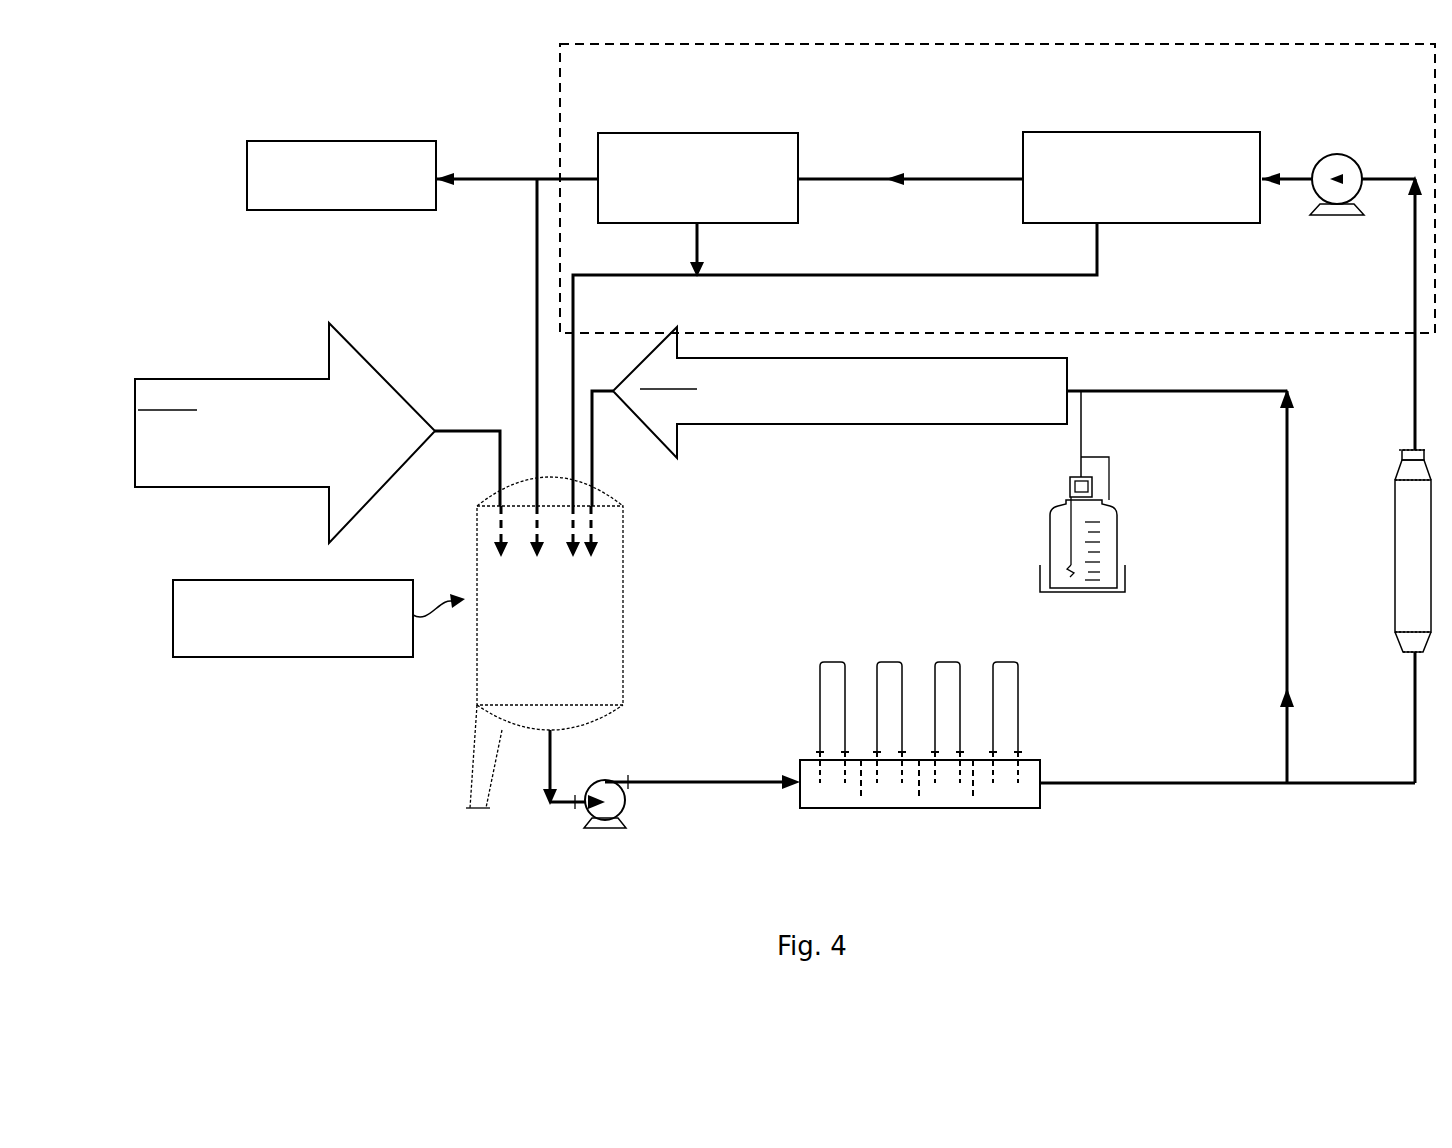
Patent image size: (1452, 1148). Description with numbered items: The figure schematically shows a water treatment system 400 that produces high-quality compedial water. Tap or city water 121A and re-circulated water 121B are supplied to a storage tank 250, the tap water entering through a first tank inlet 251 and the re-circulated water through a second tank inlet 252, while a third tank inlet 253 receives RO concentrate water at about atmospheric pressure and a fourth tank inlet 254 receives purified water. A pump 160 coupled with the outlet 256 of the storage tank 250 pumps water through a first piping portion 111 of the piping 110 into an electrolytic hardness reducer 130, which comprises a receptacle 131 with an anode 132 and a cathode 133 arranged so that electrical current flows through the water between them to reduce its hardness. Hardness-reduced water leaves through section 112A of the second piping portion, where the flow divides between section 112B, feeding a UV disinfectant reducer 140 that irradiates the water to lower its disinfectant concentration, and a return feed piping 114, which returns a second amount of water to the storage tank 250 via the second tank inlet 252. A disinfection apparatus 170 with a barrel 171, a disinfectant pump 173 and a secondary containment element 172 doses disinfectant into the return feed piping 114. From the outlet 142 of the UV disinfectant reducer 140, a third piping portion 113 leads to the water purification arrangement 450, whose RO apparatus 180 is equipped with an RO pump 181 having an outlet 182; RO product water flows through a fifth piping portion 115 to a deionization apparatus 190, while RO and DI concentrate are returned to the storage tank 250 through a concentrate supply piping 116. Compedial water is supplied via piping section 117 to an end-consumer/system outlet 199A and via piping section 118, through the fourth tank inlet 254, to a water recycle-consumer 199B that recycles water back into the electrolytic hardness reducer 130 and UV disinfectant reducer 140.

The water treatment system 400 is at (446, 100).
The water purification arrangement 450 is at (560, 86).
The end-consumer/system outlet 199A is at (296, 140).
The water recycle-consumer 199B is at (225, 578).
The Deionization (DI) apparatus 190 is at (688, 133).
The RO apparatus 180 is at (1162, 133).
The RO pump 181 is at (1338, 153).
The outlet of RO pump 182 is at (1285, 175).
The piping section 117 is at (500, 182).
The piping section 118 is at (537, 372).
The fifth piping portion 115 is at (945, 181).
The concentrate supply piping 116 is at (573, 318).
The city or tap water 121A is at (317, 433).
The re-circulated water 121B is at (829, 416).
The storage tank 250 is at (640, 598).
The first tank inlet 251 is at (490, 505).
The second tank inlet 252 is at (594, 482).
The third tank inlet 253 is at (580, 496).
The fourth tank inlet 254 is at (512, 490).
The outlet of storage tank 256 is at (540, 735).
The pump 160 is at (622, 768).
The first piping portion 111 is at (672, 777).
The piping 110 is at (1362, 285).
The electrolytic hardness reducer 130 is at (898, 812).
The receptacle 131 is at (826, 785).
The anode 132 is at (992, 778).
The cathode 133 is at (1030, 800).
The section of second piping portion 112A is at (1220, 783).
The section of second piping portion 112B is at (1357, 783).
The return feed piping 114 is at (1287, 552).
The third piping portion 113 is at (1413, 372).
The UV disinfectant reducer 140 is at (1385, 522).
The outlet of UV disinfectant reducer 142 is at (1400, 447).
The disinfection apparatus 170 is at (1032, 504).
The barrel 171 is at (1050, 527).
The secondary containment element 172 is at (1040, 570).
The disinfectant pump 173 is at (1093, 486).